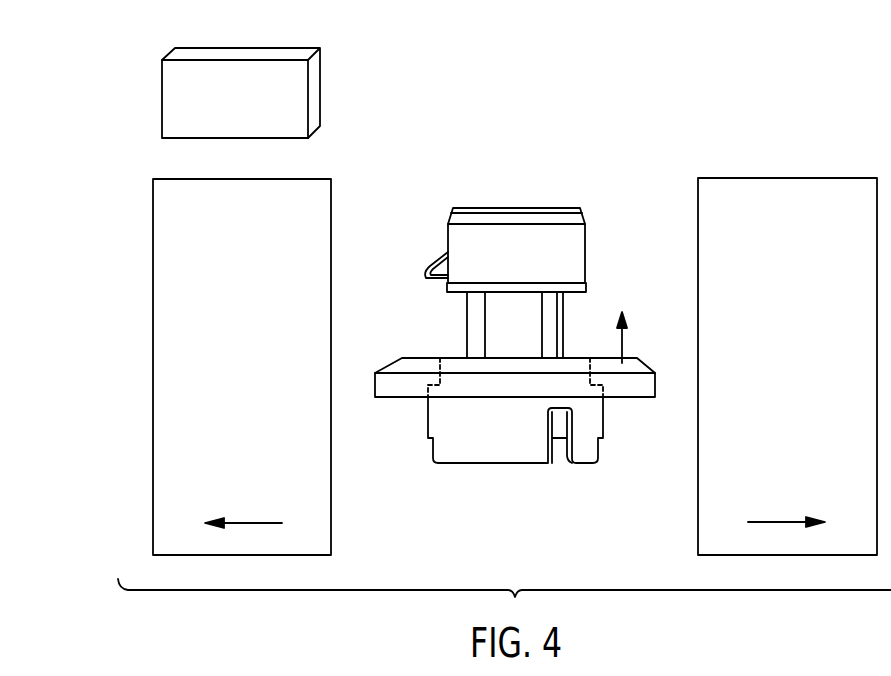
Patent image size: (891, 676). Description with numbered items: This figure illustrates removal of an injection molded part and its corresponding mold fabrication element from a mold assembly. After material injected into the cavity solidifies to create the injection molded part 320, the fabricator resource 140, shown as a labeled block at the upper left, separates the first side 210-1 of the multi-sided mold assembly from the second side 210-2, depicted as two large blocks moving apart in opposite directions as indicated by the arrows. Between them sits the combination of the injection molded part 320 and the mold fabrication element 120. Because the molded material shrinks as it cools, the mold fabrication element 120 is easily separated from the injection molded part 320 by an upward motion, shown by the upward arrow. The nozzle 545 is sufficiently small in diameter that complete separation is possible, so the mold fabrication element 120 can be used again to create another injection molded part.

The fabricator resource 140 is at (162, 102).
The first side of the multi-sided mold assembly 210-1 is at (222, 378).
The second side of the multi-sided mold assembly 210-2 is at (769, 378).
The injection molded part 320 is at (485, 232).
The nozzle 545 is at (547, 264).
The mold fabrication element 120 is at (401, 383).